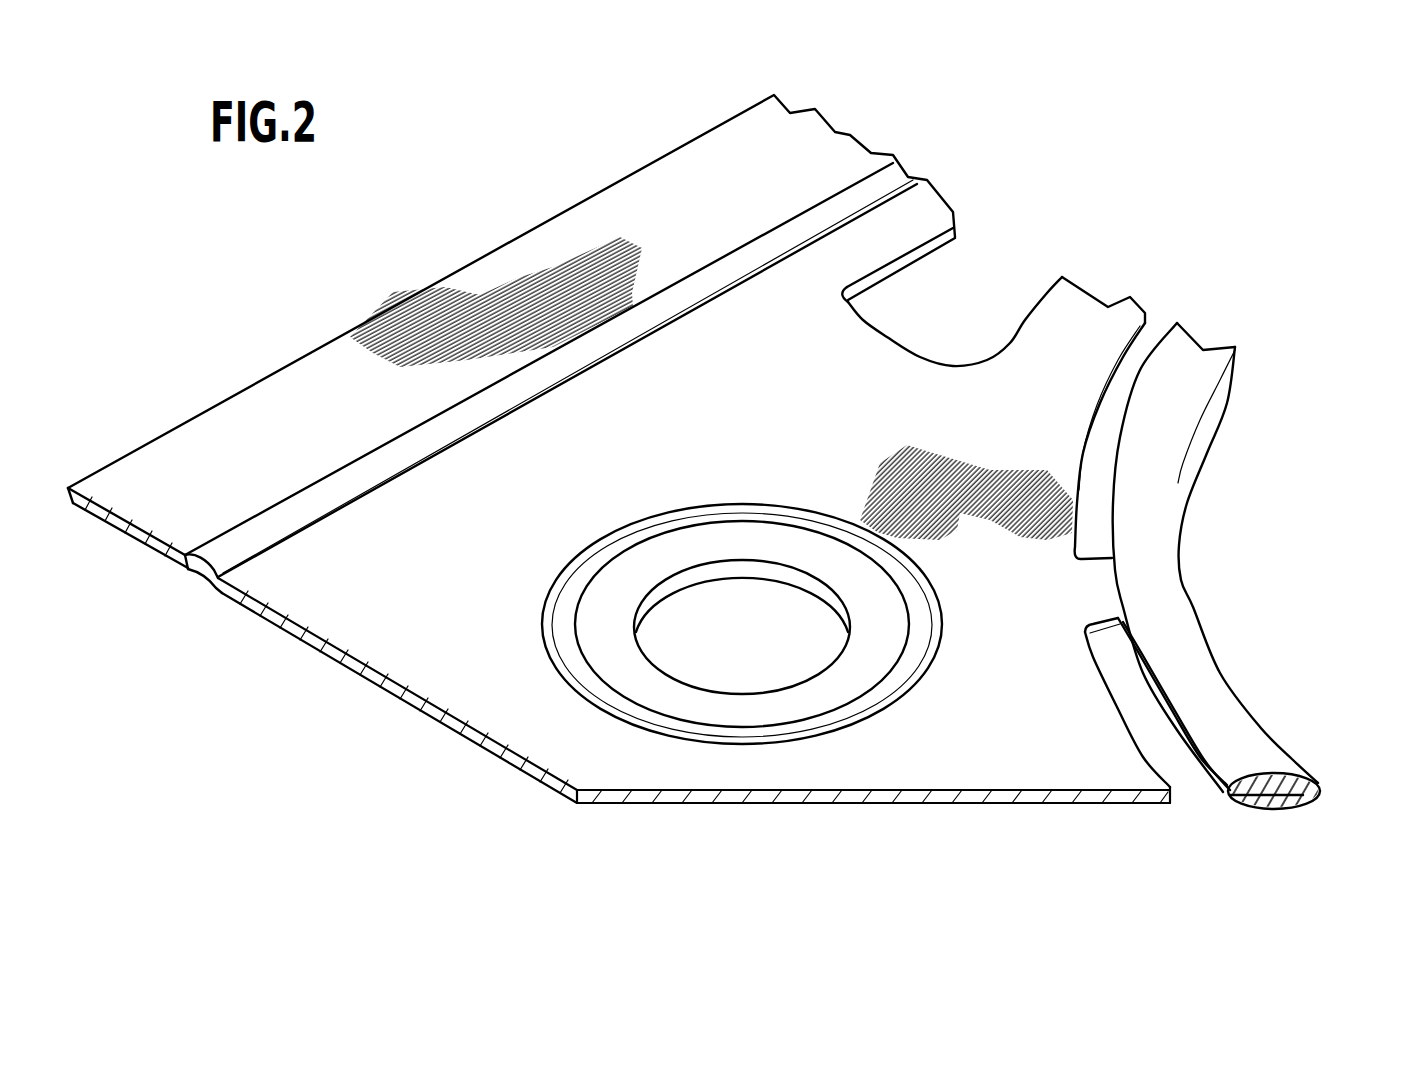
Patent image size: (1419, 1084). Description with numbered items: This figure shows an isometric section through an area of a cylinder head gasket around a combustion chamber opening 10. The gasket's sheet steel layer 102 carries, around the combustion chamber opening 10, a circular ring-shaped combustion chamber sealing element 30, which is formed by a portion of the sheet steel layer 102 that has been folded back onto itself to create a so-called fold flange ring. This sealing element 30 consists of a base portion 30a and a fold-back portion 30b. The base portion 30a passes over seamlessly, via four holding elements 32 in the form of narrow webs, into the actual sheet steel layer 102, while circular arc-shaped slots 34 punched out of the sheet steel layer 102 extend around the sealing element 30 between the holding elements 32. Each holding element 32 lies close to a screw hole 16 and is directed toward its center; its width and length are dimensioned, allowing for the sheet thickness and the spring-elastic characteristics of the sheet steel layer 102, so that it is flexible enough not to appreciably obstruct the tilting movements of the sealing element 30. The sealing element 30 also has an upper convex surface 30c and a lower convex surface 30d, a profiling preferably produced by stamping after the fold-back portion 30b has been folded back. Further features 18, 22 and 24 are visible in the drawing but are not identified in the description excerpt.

The combustion chamber opening 10 is at (1307, 508).
The screw hole 16 is at (683, 578).
The cutout 18 is at (920, 257).
The annular collar 22 is at (565, 580).
The wall 24 is at (398, 440).
The combustion chamber sealing element 30 is at (1232, 400).
The base portion 30a is at (1280, 800).
The fold-back portion 30b is at (1270, 780).
The upper convex surface 30c is at (1247, 773).
The lower convex surface 30d is at (1240, 810).
The holding element 32 is at (1097, 593).
The circular arc-shaped slot 34 is at (1108, 447).
The sheet steel layer 102 is at (252, 412).